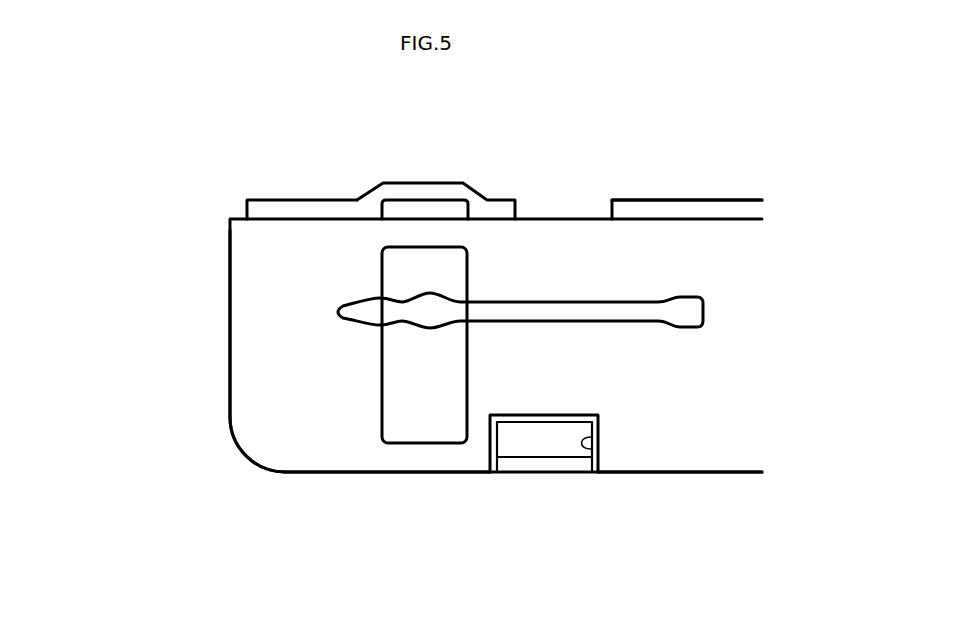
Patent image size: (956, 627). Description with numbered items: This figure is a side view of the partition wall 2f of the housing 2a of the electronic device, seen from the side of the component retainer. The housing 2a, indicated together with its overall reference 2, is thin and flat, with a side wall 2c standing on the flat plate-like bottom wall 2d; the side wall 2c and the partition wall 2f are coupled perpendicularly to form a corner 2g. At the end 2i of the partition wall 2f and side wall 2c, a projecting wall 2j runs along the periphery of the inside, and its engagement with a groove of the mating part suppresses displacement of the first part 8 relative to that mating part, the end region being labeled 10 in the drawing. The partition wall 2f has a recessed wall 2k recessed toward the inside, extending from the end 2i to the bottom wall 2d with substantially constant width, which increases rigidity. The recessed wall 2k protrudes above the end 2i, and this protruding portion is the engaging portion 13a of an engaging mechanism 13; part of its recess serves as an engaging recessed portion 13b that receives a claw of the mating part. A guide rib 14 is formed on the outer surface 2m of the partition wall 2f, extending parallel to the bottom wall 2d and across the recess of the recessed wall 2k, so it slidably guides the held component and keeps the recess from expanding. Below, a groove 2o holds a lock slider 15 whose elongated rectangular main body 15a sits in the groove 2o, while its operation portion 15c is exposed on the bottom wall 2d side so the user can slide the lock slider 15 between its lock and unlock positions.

The fixing member 2 is at (496, 257).
The housing 2a is at (303, 116).
The side wall 2c is at (166, 323).
The bottom wall 2d is at (363, 472).
The partition wall 2f is at (249, 493).
The corner 2g is at (230, 342).
The end 2i is at (701, 219).
The projecting wall 2j is at (262, 207).
The recessed wall 2k is at (398, 388).
The outer surface 2m is at (275, 442).
The groove 2o is at (597, 443).
The first part 8 is at (739, 482).
The mounting base 10 is at (689, 165).
The engaging mechanism 13 is at (464, 165).
The engaging portion 13a is at (482, 184).
The engaging recessed portion 13b is at (392, 203).
The guide rib 14 is at (657, 334).
The lock slider 15 is at (578, 482).
The main body 15a is at (538, 442).
The operation portion 15c is at (508, 472).